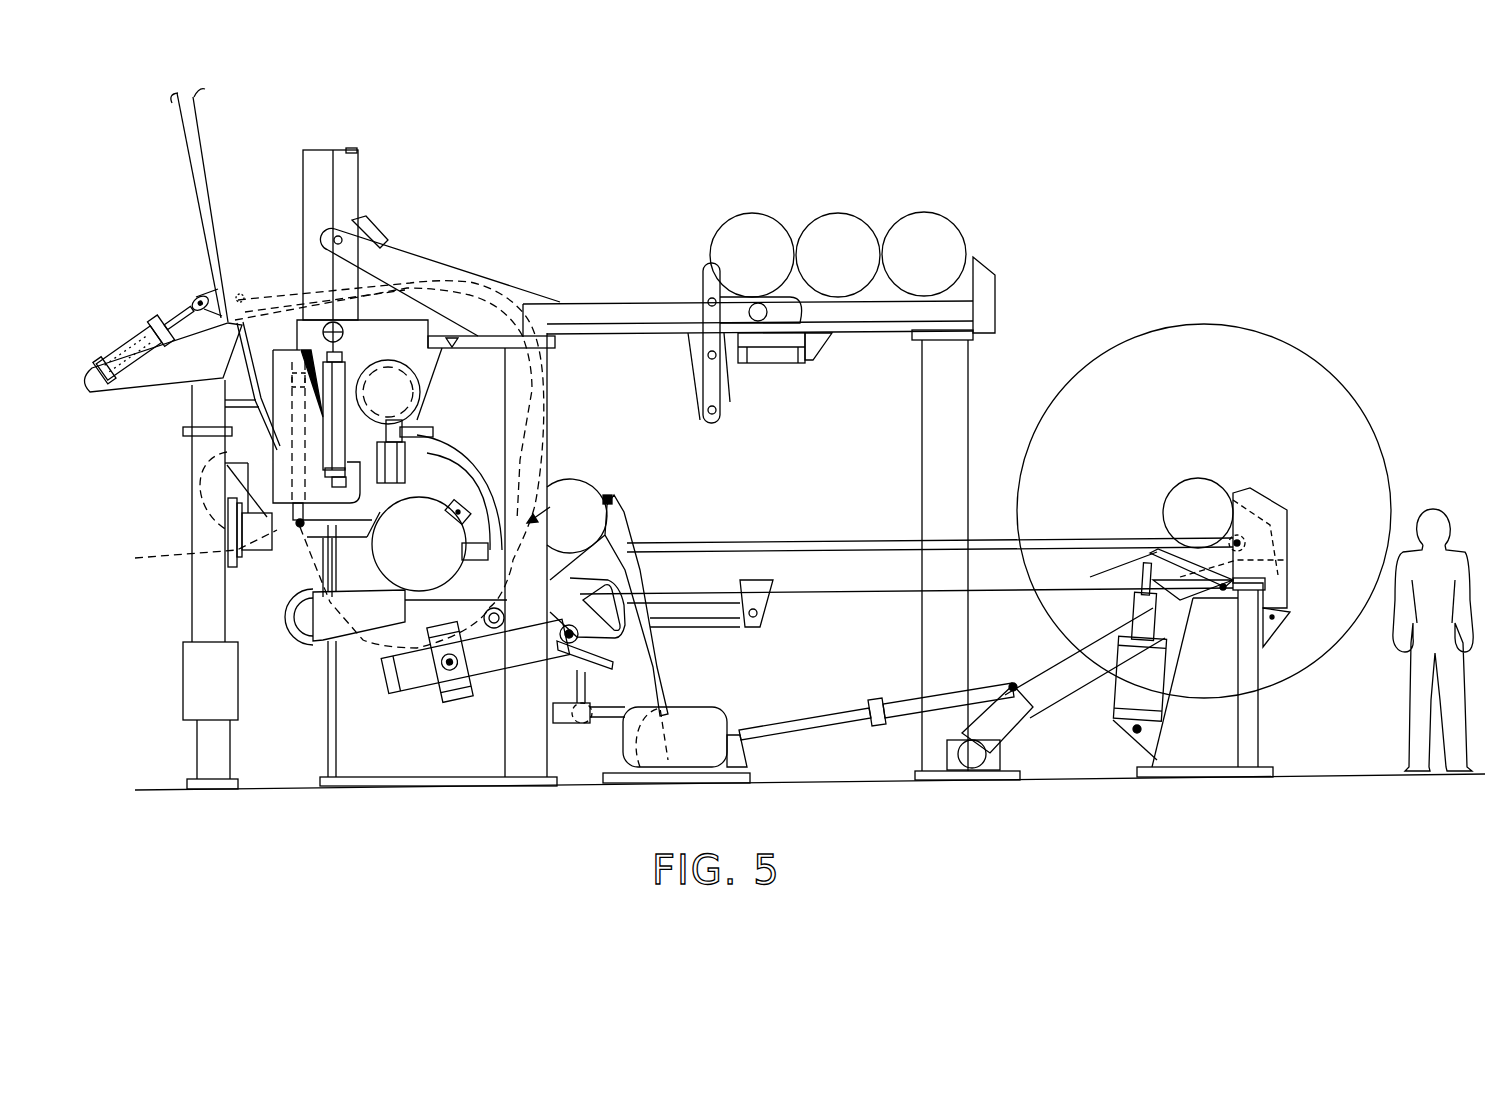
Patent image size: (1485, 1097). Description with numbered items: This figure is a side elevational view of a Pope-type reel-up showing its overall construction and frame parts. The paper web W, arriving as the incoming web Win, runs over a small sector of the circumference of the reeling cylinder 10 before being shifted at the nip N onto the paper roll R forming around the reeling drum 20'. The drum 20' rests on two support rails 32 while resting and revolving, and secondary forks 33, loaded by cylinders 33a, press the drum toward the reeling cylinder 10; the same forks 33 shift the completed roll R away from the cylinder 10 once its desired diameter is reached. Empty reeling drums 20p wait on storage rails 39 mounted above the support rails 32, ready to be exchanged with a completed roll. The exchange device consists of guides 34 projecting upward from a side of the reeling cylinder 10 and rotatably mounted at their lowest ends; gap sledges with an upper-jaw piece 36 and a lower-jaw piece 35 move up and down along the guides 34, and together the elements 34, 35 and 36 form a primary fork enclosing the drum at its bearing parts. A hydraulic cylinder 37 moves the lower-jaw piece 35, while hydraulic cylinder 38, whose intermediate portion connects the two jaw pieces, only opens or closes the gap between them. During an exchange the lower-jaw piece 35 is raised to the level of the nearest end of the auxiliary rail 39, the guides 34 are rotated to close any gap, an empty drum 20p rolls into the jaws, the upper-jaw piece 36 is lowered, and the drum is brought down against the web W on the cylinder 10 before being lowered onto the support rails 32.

The reeling cylinder 10 is at (362, 607).
The reeling drum 20' is at (439, 508).
The empty reeling drums 20p is at (907, 227).
The support rails 32 is at (800, 563).
The secondary forks 33 is at (647, 687).
The cylinders 33a is at (408, 677).
The guides 34 is at (345, 193).
The lower-jaw piece 35 is at (435, 432).
The upper-jaw piece 36 is at (420, 385).
The hydraulic cylinder 37 is at (295, 403).
The hydraulic cylinder 38 is at (350, 378).
The storage rails 39 is at (618, 317).
The nip roller N is at (580, 477).
The paper roll R is at (1188, 341).
The paper web W is at (293, 522).
The incoming web Win is at (175, 556).